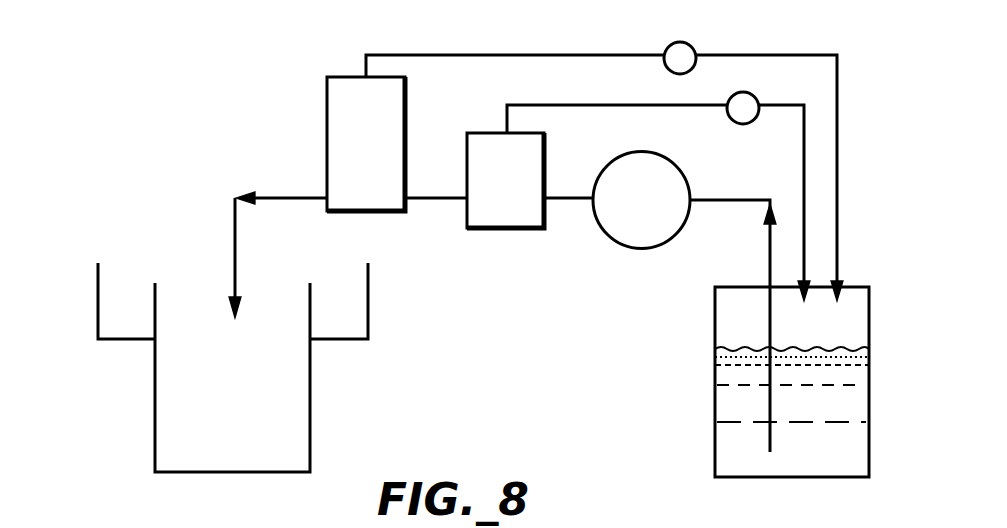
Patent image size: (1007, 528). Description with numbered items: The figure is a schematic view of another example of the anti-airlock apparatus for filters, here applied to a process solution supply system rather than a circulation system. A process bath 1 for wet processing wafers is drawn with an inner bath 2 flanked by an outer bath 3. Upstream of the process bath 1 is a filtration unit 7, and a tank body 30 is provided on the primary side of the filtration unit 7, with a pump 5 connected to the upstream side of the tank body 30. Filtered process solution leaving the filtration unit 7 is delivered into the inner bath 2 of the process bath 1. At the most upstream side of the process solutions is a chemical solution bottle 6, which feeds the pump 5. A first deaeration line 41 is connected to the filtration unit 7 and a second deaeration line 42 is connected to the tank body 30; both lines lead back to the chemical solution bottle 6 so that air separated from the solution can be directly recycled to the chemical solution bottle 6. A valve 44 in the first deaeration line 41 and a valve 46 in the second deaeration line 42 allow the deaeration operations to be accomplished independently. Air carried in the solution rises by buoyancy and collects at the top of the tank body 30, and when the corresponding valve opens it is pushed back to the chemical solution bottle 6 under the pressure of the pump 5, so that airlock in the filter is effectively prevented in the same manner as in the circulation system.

The process bath 1 is at (142, 410).
The inner bath 2 is at (312, 422).
The outer bath 3 is at (98, 305).
The pump 5 is at (640, 249).
The chemical solution bottle 6 is at (715, 332).
The filtration unit 7 is at (327, 143).
The tank body 30 is at (513, 229).
The first deaeration line 41 is at (472, 55).
The second deaeration line 42 is at (535, 105).
The valve 44 is at (683, 42).
The valve 46 is at (745, 92).